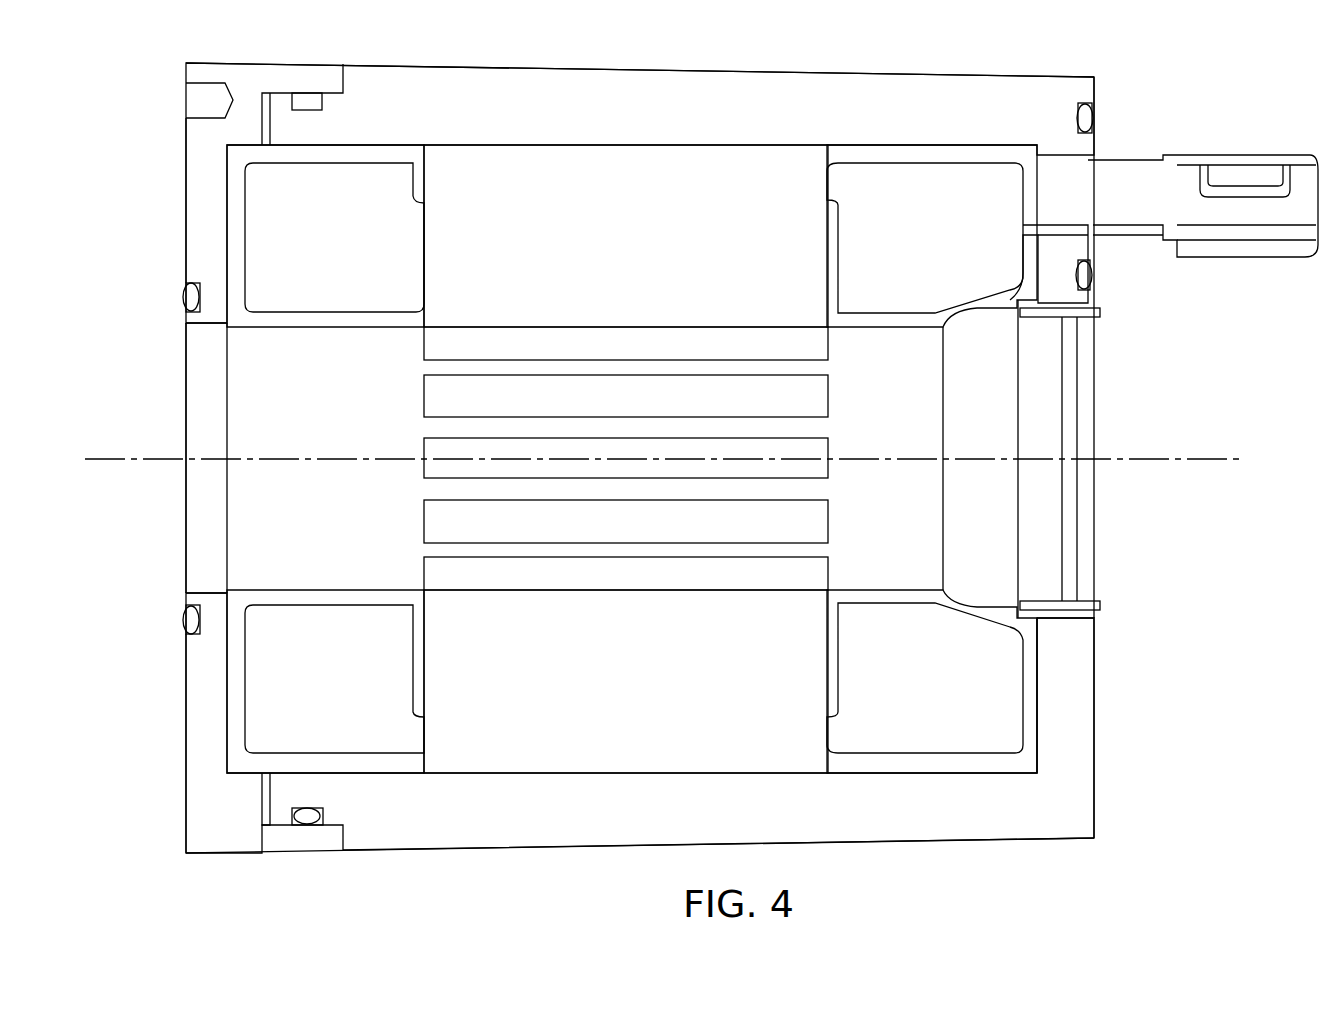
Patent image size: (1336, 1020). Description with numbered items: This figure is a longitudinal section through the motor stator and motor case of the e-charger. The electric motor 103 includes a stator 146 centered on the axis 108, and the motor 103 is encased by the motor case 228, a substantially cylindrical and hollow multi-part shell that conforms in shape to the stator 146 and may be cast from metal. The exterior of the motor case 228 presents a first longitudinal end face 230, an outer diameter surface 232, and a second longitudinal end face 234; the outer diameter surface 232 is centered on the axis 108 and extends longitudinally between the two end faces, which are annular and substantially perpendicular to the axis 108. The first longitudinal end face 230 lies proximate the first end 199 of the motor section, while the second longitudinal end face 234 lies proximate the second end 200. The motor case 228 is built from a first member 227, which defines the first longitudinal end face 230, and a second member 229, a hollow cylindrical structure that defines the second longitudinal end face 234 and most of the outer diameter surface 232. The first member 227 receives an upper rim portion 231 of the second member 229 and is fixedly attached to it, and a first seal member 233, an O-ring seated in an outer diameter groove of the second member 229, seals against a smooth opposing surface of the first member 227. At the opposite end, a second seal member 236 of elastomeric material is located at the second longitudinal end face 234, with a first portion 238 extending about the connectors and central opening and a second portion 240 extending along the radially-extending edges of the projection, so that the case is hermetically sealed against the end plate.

The electric motor 103 is at (345, 157).
The axis 108 is at (1220, 458).
The stator 146 is at (540, 165).
The first end 199 is at (186, 415).
The second end 200 is at (1094, 433).
The first member 227 is at (186, 735).
The motor case 228 is at (668, 118).
The second member 229 is at (540, 840).
The first longitudinal end face 230 is at (186, 210).
The upper rim portion 231 is at (277, 812).
The outer diameter surface 232 is at (540, 68).
The first seal member 233 is at (305, 822).
The second longitudinal end face 234 is at (1094, 655).
The second seal member 236 is at (1100, 107).
The first portion 238 is at (1096, 118).
The second portion 240 is at (1095, 275).